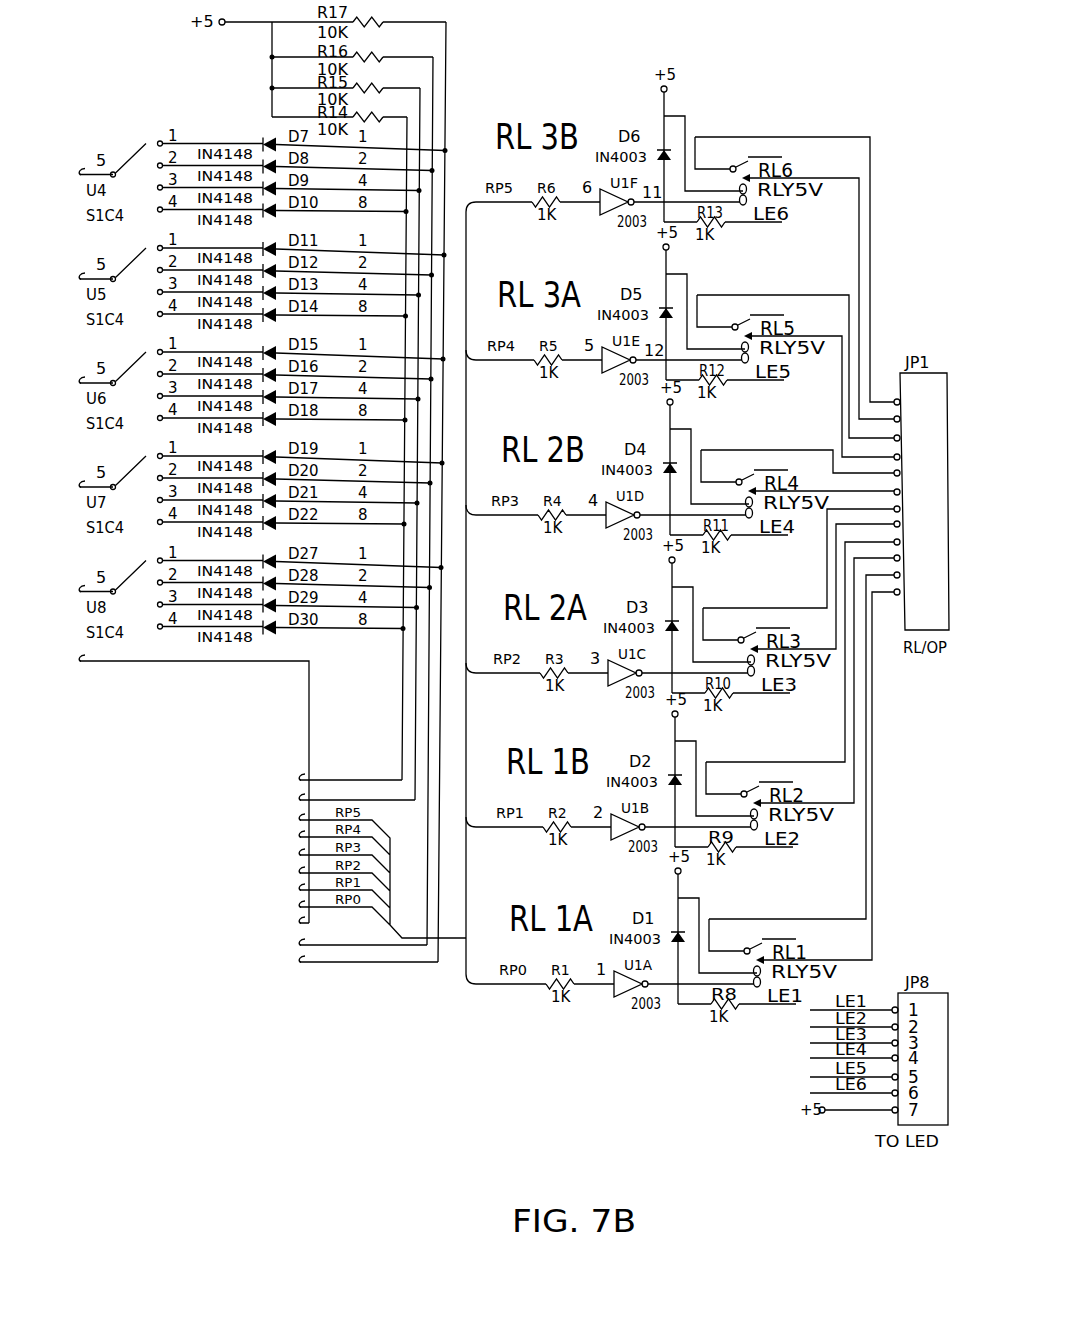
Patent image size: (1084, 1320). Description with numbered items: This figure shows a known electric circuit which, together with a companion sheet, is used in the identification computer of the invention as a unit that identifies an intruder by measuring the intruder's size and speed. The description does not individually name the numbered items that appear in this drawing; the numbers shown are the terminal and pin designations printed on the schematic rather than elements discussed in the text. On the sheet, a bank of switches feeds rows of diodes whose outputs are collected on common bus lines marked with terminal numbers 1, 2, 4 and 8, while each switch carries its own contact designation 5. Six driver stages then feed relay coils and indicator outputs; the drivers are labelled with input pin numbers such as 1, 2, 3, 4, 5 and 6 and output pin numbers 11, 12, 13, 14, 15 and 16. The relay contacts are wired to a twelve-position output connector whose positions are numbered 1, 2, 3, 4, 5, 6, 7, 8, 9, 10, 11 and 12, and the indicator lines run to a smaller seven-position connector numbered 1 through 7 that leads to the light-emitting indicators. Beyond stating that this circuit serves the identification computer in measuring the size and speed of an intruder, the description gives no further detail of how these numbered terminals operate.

The connector JP1 pin 1 is at (906, 402).
The connector JP1 pin 2 is at (906, 419).
The connector JP1 pin 3 is at (906, 438).
The connector JP1 pin 4 is at (906, 457).
The connector JP1 pin 5 is at (906, 473).
The connector JP1 pin 6 is at (906, 492).
The connector JP1 pin 7 is at (906, 509).
The connector JP1 pin 8 is at (906, 524).
The connector JP1 pin 9 is at (906, 542).
The connector JP1 pin 10 is at (912, 558).
The connector JP1 pin 11 is at (912, 575).
The connector JP1 pin 12 is at (912, 592).
The driver U1D output pin 13 is at (637, 512).
The driver U1C output pin 14 is at (639, 670).
The driver U1B output pin 15 is at (642, 824).
The driver U1A output pin 16 is at (645, 981).